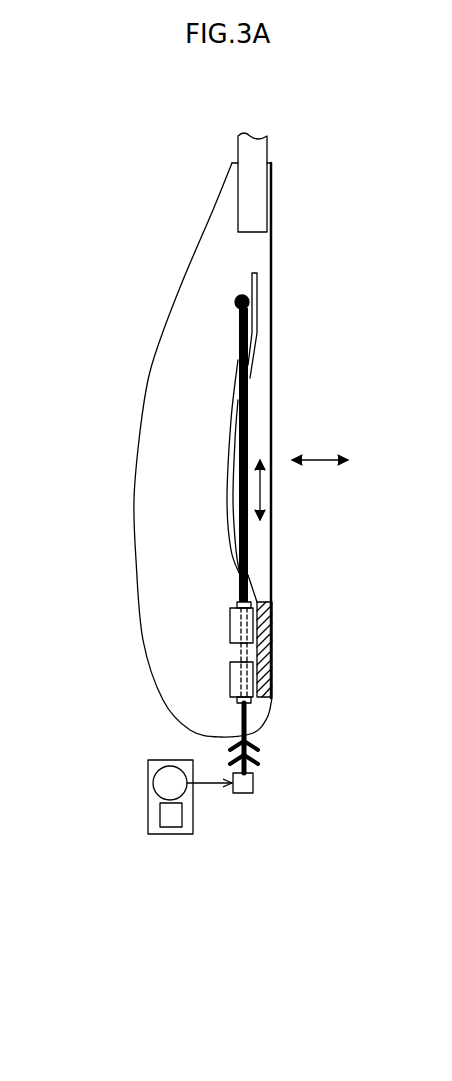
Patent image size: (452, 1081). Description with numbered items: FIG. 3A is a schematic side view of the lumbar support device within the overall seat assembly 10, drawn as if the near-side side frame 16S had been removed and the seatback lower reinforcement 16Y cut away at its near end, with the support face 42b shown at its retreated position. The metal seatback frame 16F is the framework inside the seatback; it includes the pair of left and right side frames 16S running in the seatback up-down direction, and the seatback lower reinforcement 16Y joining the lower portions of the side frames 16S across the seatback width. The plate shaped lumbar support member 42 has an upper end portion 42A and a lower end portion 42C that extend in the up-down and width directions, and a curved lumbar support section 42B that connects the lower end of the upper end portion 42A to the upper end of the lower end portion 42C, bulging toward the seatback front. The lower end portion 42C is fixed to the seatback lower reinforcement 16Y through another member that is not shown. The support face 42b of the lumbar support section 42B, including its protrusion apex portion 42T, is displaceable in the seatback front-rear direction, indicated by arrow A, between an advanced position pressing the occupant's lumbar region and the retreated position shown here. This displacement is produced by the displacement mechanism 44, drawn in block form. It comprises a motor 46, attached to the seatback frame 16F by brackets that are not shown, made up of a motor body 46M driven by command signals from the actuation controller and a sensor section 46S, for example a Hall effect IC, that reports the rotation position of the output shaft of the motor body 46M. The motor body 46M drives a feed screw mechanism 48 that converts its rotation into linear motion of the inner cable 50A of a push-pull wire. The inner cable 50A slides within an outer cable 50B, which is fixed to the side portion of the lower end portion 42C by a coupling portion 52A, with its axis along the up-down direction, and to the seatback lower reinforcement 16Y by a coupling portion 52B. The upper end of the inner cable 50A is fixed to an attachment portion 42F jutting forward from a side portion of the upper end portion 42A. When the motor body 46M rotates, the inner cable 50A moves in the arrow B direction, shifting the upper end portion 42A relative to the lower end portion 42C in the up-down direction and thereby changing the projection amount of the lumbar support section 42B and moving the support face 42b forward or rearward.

The image forming apparatus 10 is at (312, 305).
The side frame 16S is at (190, 300).
The seatback frame 16F is at (285, 197).
The seatback lower reinforcement 16Y is at (265, 644).
The lumbar support member 42 is at (224, 397).
The upper end portion 42A is at (247, 275).
The attachment portion 42F is at (237, 308).
The protrusion apex portion 42T is at (223, 477).
The lumbar support section 42B is at (222, 512).
The support face 42b is at (227, 498).
The lower end portion 42C is at (235, 648).
The coupling portion 52A is at (230, 623).
The coupling portion 52B is at (230, 675).
The inner cable 50A is at (248, 710).
The outer cable 50B is at (236, 655).
The feed screw mechanism 48 is at (253, 785).
The motor 46 is at (148, 765).
The motor body 46M is at (152, 783).
The sensor section 46S is at (160, 815).
The displacement mechanism 44 is at (273, 838).
The arrow A direction A is at (318, 457).
The arrow B direction B is at (262, 490).